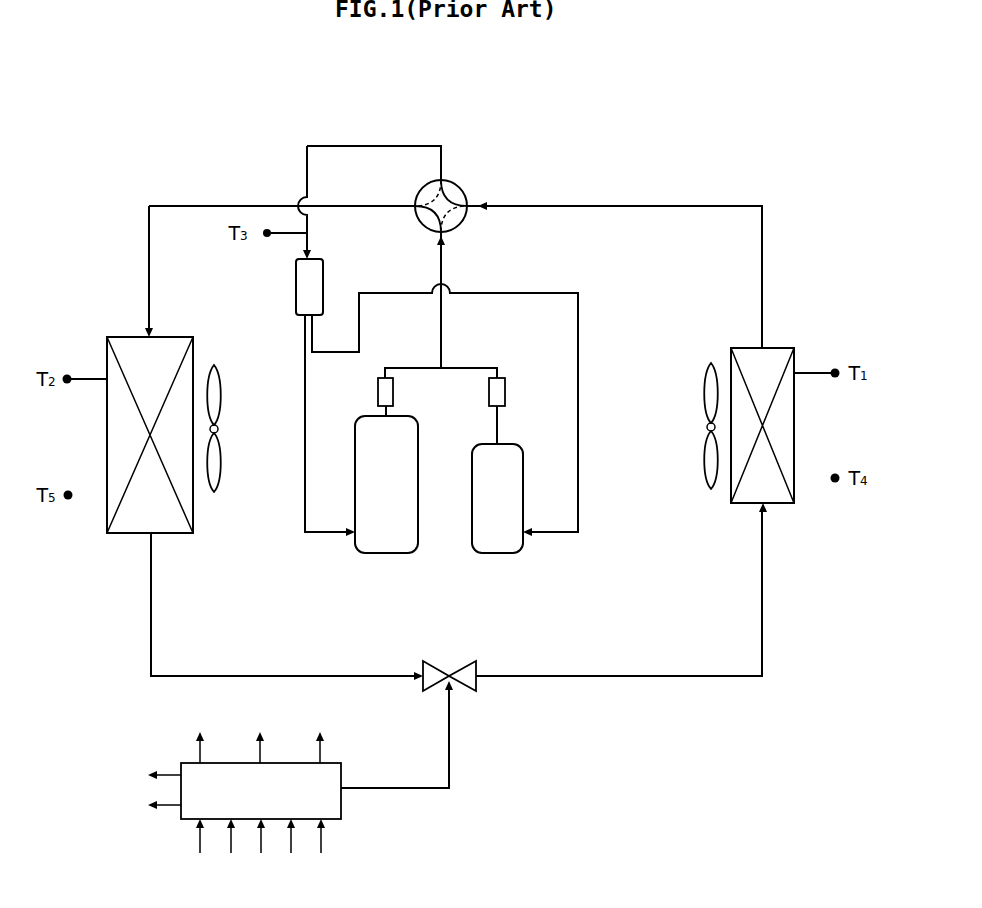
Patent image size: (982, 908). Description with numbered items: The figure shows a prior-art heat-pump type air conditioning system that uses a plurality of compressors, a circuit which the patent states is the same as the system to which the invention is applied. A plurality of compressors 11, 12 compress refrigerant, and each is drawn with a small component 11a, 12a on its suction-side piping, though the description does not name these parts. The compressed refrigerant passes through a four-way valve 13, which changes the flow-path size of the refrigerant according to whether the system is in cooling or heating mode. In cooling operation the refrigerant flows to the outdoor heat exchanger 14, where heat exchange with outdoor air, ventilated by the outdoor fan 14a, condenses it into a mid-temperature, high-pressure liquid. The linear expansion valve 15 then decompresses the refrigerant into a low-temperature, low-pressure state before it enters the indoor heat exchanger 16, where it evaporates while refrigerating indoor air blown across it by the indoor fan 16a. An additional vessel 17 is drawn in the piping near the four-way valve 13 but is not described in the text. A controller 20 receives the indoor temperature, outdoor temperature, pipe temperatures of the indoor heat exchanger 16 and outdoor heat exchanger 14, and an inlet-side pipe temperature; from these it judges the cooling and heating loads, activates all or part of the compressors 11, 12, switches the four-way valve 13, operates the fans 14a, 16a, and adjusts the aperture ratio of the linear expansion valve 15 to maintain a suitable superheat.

The compressor 11 is at (386, 556).
The compressor 12 is at (500, 556).
The first compressor valve 11a is at (394, 393).
The second compressor valve 12a is at (506, 393).
The four-way valve 13 is at (461, 184).
The outdoor heat exchanger 14 is at (107, 440).
The outdoor fan 14a is at (221, 391).
The linear expansion valve 15 is at (477, 688).
The indoor heat exchanger 16 is at (794, 424).
The indoor fan 16a is at (704, 391).
The accumulator 17 is at (296, 289).
The controller 20 is at (341, 812).